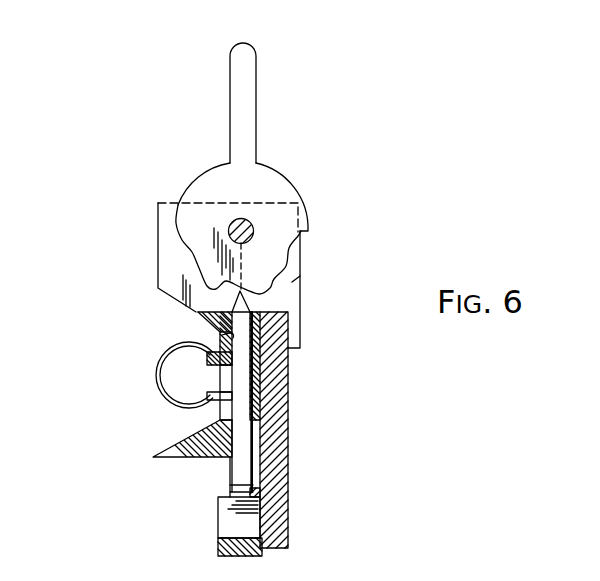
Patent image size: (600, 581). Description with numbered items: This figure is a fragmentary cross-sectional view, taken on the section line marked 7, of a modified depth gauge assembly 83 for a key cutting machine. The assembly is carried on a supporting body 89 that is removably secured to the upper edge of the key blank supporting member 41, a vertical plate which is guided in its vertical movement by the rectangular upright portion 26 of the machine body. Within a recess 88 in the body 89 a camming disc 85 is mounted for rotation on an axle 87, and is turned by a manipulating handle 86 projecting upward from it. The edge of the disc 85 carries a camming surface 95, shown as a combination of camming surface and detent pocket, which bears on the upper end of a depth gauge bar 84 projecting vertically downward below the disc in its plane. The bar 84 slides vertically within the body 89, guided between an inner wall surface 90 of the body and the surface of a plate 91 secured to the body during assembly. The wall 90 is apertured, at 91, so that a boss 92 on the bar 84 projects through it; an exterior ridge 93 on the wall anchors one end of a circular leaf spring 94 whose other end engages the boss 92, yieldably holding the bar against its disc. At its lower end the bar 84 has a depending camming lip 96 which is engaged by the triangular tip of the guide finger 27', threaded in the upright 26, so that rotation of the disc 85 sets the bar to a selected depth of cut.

The section line 7- 7 is at (242, 77).
The upright portion 26 is at (219, 545).
The guide finger 27' is at (210, 517).
The key blank supporting member 41 is at (285, 444).
The depth gauge assembly 83 is at (307, 210).
The depth gauge bar 84 is at (236, 463).
The camming disc 85 is at (192, 217).
The manipulating handle 86 is at (234, 117).
The axle 87 is at (234, 223).
The recess 88 is at (282, 297).
The supporting body 89 is at (294, 280).
The inner wall surface 90 is at (222, 335).
The plate 91 is at (218, 417).
The boss 92 is at (210, 399).
The ridge 93 is at (208, 358).
The circular leaf spring 94 is at (155, 372).
The camming surface 95 is at (198, 263).
The camming lip 96 is at (252, 492).